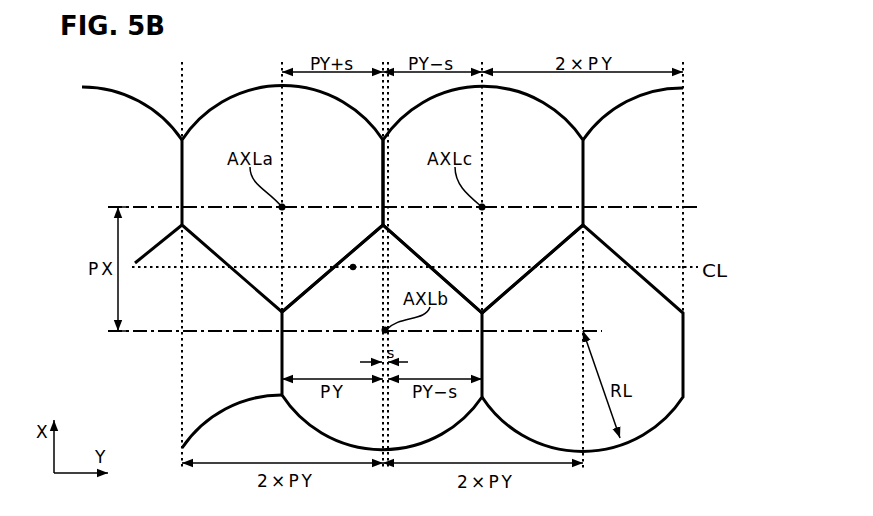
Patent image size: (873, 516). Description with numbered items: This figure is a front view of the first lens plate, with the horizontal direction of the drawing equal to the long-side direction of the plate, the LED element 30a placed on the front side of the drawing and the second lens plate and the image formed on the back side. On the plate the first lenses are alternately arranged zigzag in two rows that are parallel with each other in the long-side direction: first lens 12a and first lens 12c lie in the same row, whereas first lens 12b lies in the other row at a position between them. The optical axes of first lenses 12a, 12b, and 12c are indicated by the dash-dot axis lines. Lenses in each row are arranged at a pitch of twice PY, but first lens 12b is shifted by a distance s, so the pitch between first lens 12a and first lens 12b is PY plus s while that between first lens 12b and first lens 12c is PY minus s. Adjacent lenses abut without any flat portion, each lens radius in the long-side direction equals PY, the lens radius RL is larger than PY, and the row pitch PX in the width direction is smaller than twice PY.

The first lens 12a is at (233, 97).
The first lens 12b is at (432, 434).
The first lens 12c is at (565, 121).
The LED element 30a is at (353, 270).